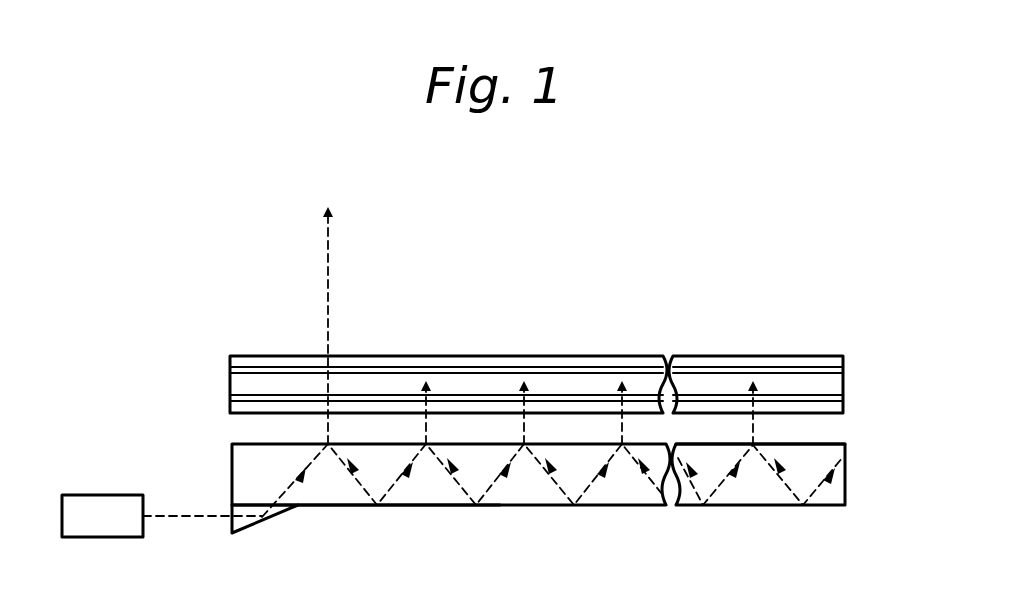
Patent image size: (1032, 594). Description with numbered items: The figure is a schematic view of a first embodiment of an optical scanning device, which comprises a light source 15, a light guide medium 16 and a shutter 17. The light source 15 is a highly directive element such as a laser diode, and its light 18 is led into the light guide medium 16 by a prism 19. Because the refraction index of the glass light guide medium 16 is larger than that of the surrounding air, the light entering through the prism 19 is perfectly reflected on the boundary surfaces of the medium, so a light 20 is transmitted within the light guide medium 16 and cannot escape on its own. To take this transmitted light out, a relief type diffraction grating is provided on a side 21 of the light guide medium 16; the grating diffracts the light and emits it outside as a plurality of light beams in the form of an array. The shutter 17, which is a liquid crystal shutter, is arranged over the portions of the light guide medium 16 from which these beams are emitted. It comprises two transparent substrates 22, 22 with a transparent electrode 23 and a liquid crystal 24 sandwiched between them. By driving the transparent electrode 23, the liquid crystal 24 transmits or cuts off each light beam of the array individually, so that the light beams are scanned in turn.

The light source 15 is at (112, 537).
The light guide medium 16 is at (848, 445).
The shutter 17 is at (848, 355).
The light 18 is at (190, 518).
The prism 19 is at (257, 522).
The light transmitted within the light guide medium 20 is at (502, 506).
The side of the light guide medium 21 is at (822, 446).
The transparent substrates 22 is at (230, 362).
The transparent electrode 23 is at (230, 370).
The liquid crystal 24 is at (267, 383).